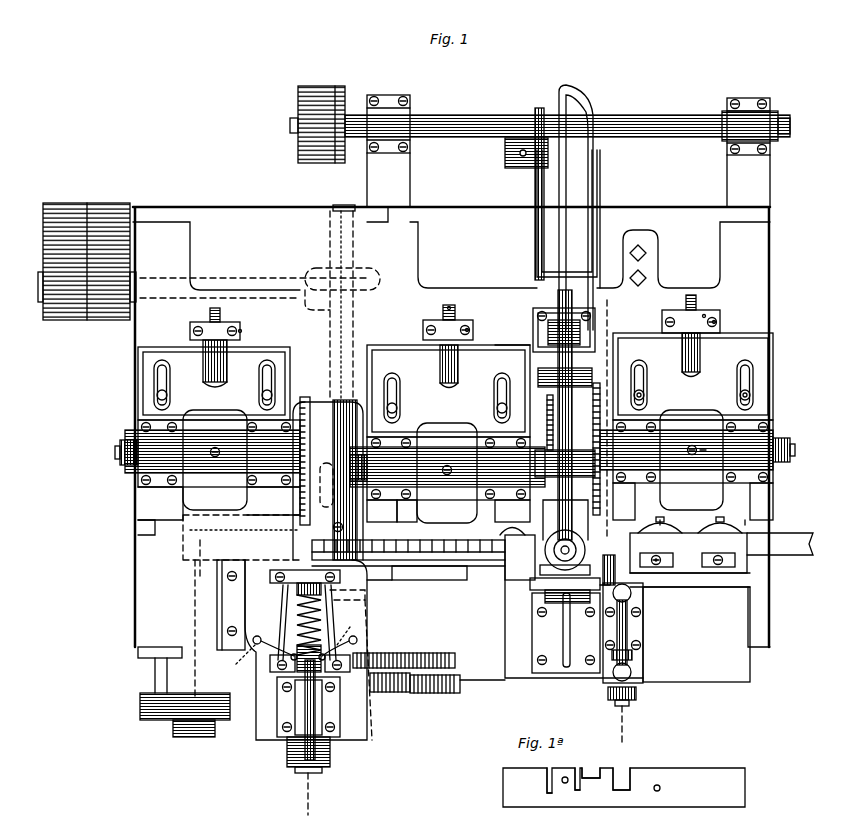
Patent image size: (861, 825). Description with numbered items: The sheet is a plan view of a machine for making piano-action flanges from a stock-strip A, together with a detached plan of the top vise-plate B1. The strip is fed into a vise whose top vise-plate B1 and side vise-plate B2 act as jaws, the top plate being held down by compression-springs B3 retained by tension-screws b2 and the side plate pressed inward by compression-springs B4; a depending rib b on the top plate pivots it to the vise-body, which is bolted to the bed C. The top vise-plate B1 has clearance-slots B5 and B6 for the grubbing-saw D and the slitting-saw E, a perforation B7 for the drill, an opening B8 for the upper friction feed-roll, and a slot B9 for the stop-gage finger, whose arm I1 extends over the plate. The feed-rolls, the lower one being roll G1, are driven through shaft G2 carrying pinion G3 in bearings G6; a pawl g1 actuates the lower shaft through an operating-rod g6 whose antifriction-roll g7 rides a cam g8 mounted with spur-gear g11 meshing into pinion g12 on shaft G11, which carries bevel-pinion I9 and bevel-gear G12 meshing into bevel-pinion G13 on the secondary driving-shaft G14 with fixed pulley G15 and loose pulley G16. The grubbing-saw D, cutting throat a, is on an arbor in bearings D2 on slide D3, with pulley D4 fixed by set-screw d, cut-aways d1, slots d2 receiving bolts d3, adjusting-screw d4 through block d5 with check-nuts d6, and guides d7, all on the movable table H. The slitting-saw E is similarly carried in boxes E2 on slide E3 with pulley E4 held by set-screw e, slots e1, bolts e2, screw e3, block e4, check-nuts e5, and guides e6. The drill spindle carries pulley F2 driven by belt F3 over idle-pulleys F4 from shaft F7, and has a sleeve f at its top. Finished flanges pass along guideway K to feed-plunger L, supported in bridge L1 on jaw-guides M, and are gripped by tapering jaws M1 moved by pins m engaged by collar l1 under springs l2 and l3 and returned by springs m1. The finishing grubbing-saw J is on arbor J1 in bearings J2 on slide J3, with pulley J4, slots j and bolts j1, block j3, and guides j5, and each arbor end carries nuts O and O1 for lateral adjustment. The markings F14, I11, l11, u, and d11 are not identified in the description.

In FIG. 1, the shaft F7 is at (478, 117).
In FIG. 1, the idle-pulleys F4 is at (537, 118).
In FIG. 1, the small pulley F2 is at (537, 194).
In FIG. 1, the belt loop F14 is at (592, 112).
In FIG. 1, the round belt F3 is at (592, 200).
In FIG. 1, the loose pulley G16 is at (87, 261).
In FIG. 1, the fixed pulley G15 is at (104, 261).
In FIG. 1, the secondary driving-shaft G14 is at (255, 274).
In FIG. 1, the bevel-gear G12 is at (316, 268).
In FIG. 1, the bevel-pinion G13 is at (317, 308).
In FIG. 1, the horizontally-arranged shaft G11 is at (333, 344).
In FIG. 1, the pulley J4 is at (200, 315).
In FIG. 1, the bearings J2 is at (226, 318).
In FIG. 1, the block j3 is at (241, 330).
In FIG. 1, the elongated slots j is at (153, 382).
In FIG. 1, the slide J3 is at (214, 380).
In FIG. 1, the bolts j1 is at (261, 395).
In FIG. 1, the finishing grubbing-saw J is at (303, 451).
In FIG. 1, the nut O1 is at (806, 432).
In FIG. 1, the nut O is at (133, 447).
In FIG. 1, the arbor J1 is at (212, 453).
In FIG. 1, the guides j5 is at (138, 522).
In FIG. 1, the vertical shaft I11 is at (338, 455).
In FIG. 1, the set-screw e is at (451, 463).
In FIG. 1, the check-nuts e5 is at (444, 310).
In FIG. 1, the screw e3 is at (454, 310).
In FIG. 1, the block e4 is at (470, 330).
In FIG. 1, the movable table H is at (512, 335).
In FIG. 1, the slide E3 is at (448, 391).
In FIG. 1, the elongated slots e1 is at (398, 394).
In FIG. 1, the bolts e2 is at (398, 408).
In FIG. 1, the pulley E4 is at (447, 473).
In FIG. 1, the slitting-saw E is at (556, 416).
In FIG. 1, the boxes E2 is at (447, 468).
In FIG. 1, the grubbing-saw D is at (585, 449).
In FIG. 1, the depending rib b is at (607, 415).
In FIG. 1, the arm I1 is at (382, 511).
In FIG. 1, the guides e6 is at (463, 517).
In FIG. 1, the pawl g1 is at (400, 546).
In FIG. 1, the feed-plunger L is at (300, 549).
In FIG. 1, the jaws M1 is at (241, 607).
In FIG. 1, the jaw-guides M is at (270, 614).
In FIG. 1, the bridge L1 is at (305, 578).
In FIG. 1, the movable collar l1 is at (272, 682).
In FIG. 1, the collar l11 is at (297, 590).
In FIG. 1, the bevel-pinion I9 is at (345, 598).
In FIG. 1, the slot u is at (384, 599).
In FIG. 1, the bed C is at (429, 590).
In FIG. 1, the horizontal guideway K is at (480, 574).
In FIG. 1, the compression-springs B3 is at (524, 604).
In FIG. 1, the pulley d11 is at (565, 546).
In FIG. 1, the lower friction feed-roll G1 is at (604, 570).
In FIG. 1, the shaft G2 is at (604, 590).
In FIG. 1, the adjusting-screw d4 is at (691, 295).
In FIG. 1, the block d5 is at (706, 314).
In FIG. 1, the check-nuts d6 is at (716, 322).
In FIG. 1, the elongated slots d2 is at (640, 368).
In FIG. 1, the bolts d3 is at (644, 394).
In FIG. 1, the slide D3 is at (693, 376).
In FIG. 1, the cut-aways d1 is at (691, 460).
In FIG. 1, the bearings D2 is at (686, 451).
In FIG. 1, the pulley D4 is at (685, 448).
In FIG. 1, the set-screw d is at (708, 448).
In FIG. 1, the guides d7 is at (702, 501).
In FIG. 1, the compression-springs B4 is at (660, 520).
In FIG. 1, the side vise-plate B2 is at (688, 529).
In FIG. 1, the top vise-plate B1 is at (690, 560).
In FIG. 1A, the top vise-plate B1 is at (624, 787).
In FIG. 1, the stock-strip A is at (780, 544).
In FIG. 1, the tension-screws b2 is at (657, 567).
In FIG. 1, the bearings G6 is at (643, 603).
In FIG. 1, the pinion G3 is at (632, 655).
In FIG. 1, the spiral spring l3 is at (296, 622).
In FIG. 1, the springs m1 is at (289, 642).
In FIG. 1, the pin m is at (305, 649).
In FIG. 1, the spiral spring l2 is at (322, 668).
In FIG. 1, the pinion g12 is at (372, 742).
In FIG. 1, the spur-gear g11 is at (455, 662).
In FIG. 1, the antifriction-roll g7 is at (460, 688).
In FIG. 1, the operating-rod g6 is at (497, 678).
In FIG. 1, the cam g8 is at (392, 693).
In FIG. 1, the sleeve f is at (302, 799).
In FIG. 1A, the clearance-slot B6 is at (549, 768).
In FIG. 1A, the clearance-slot B5 is at (592, 770).
In FIG. 1A, the throat a is at (628, 733).
In FIG. 1A, the opening B8 is at (627, 780).
In FIG. 1A, the perforation B7 is at (565, 784).
In FIG. 1A, the slot B9 is at (578, 792).